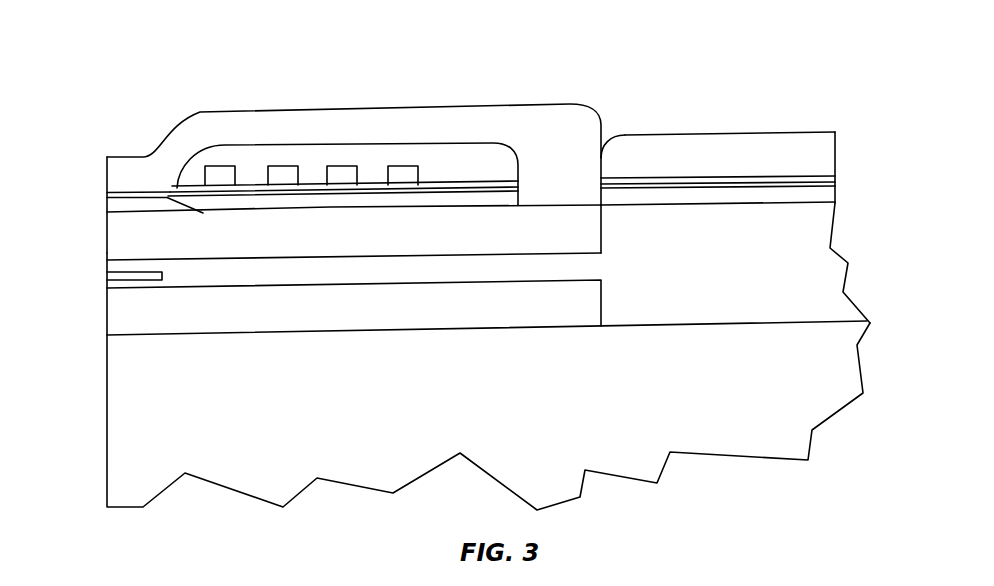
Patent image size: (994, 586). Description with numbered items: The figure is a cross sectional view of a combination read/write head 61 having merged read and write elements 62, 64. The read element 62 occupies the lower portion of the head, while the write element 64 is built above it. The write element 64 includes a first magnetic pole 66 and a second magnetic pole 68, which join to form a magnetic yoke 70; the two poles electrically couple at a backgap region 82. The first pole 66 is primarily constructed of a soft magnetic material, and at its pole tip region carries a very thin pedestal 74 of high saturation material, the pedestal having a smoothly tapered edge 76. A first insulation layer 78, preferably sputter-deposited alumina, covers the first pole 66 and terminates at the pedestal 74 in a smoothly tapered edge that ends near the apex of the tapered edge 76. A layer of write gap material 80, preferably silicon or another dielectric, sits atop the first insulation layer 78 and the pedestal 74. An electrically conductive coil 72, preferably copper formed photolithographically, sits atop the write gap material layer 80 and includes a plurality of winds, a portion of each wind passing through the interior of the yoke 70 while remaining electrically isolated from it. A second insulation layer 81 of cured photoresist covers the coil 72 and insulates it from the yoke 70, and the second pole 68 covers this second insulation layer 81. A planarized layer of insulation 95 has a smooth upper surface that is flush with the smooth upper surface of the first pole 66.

The combination read/write head 61 is at (549, 61).
The read element 62 is at (92, 220).
The write element 64 is at (70, 162).
The first magnetic pole 66 is at (293, 237).
The second magnetic pole 68 is at (258, 120).
The magnetic yoke 70 is at (603, 107).
The electrically conductive coil 72 is at (344, 166).
The pedestal 74 is at (133, 205).
The tapered edge 76 is at (203, 213).
The first insulation layer 78 is at (378, 202).
The write gap material layer 80 is at (187, 191).
The second insulation layer 81 is at (304, 156).
The backgap region 82 is at (582, 190).
The layer of insulation 95 is at (833, 240).